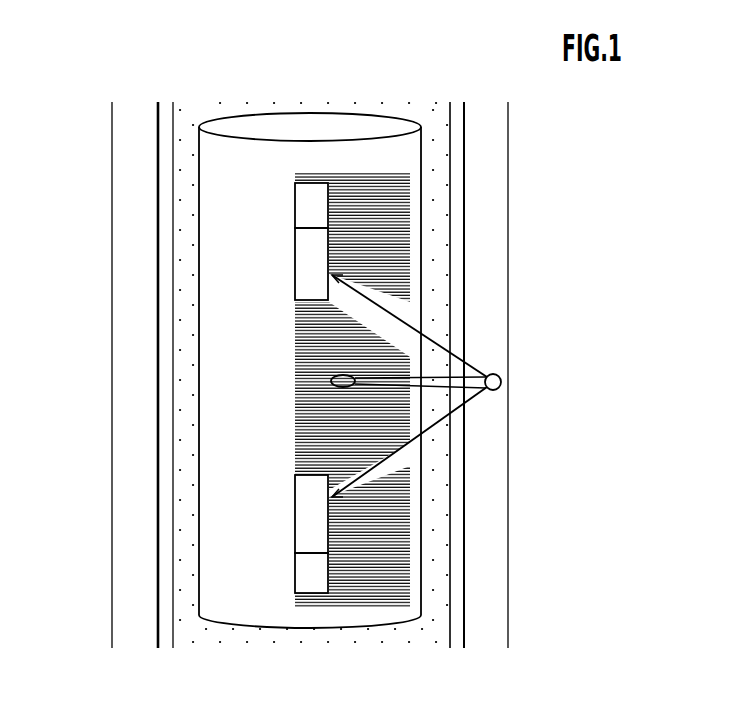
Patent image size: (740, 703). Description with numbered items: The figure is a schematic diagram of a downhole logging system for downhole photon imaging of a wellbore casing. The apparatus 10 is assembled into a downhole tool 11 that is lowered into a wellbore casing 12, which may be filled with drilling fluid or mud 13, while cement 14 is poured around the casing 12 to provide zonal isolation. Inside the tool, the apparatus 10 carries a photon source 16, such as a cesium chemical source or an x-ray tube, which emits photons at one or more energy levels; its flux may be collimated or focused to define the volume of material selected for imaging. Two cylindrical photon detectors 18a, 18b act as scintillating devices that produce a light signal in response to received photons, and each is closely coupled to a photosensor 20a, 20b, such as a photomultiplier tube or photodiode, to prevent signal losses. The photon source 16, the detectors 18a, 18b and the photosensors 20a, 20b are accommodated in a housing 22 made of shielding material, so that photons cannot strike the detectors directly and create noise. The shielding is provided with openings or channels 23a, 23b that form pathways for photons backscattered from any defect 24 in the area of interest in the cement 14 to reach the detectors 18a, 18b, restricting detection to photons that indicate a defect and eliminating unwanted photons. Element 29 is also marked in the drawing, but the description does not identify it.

The apparatus 10 is at (394, 224).
The downhole tool 11 is at (238, 167).
The wellbore casing 12 is at (165, 382).
The drilling fluid or mud 13 is at (190, 516).
The cement 14 is at (138, 284).
The photon source 16 is at (345, 383).
The photon detector 18a is at (310, 262).
The photon detector 18b is at (310, 512).
The photosensor 20a is at (310, 203).
The photosensor 20b is at (312, 573).
The housing 22 is at (362, 546).
The opening or channel 23a is at (402, 289).
The opening or channel 23b is at (362, 488).
The defect 24 is at (490, 374).
The reflected beam 29 is at (438, 433).